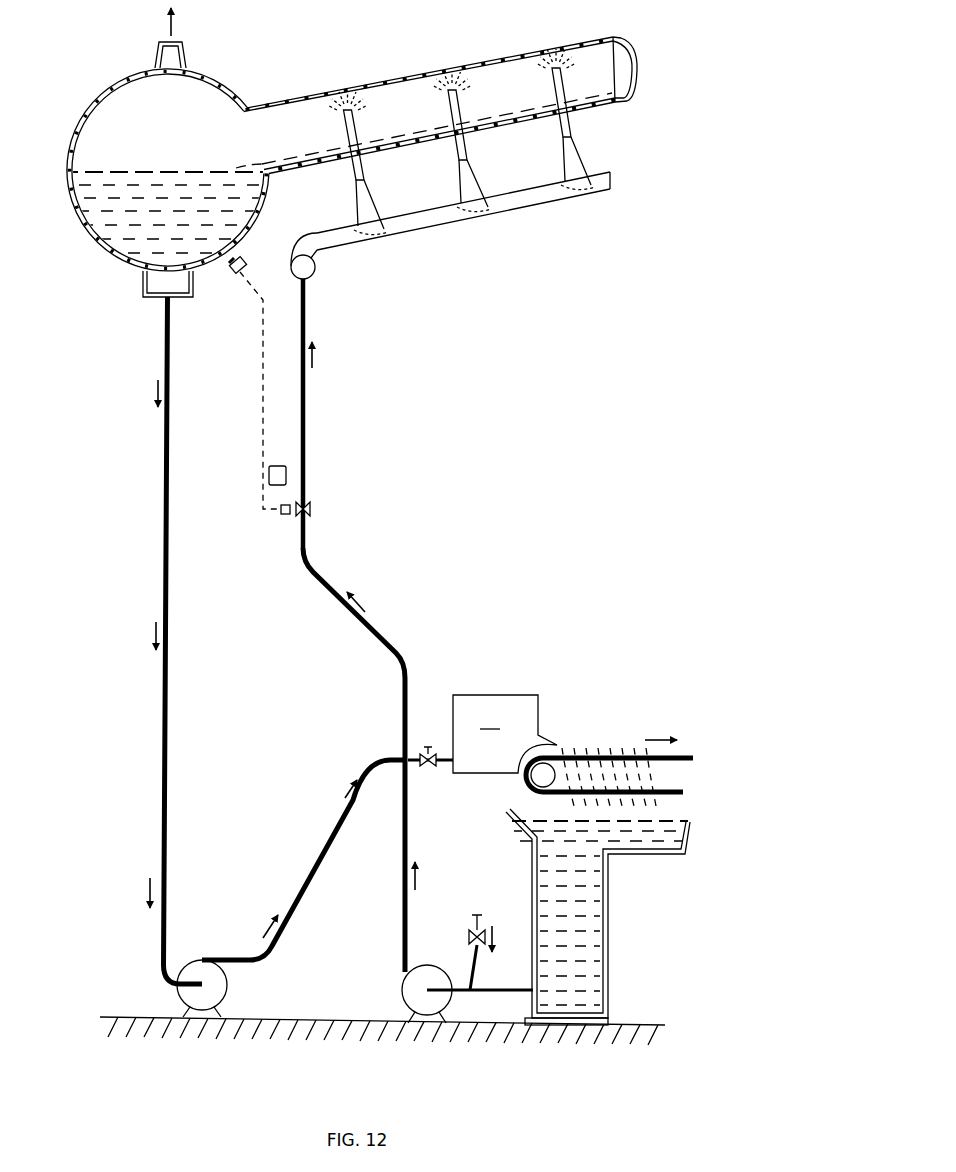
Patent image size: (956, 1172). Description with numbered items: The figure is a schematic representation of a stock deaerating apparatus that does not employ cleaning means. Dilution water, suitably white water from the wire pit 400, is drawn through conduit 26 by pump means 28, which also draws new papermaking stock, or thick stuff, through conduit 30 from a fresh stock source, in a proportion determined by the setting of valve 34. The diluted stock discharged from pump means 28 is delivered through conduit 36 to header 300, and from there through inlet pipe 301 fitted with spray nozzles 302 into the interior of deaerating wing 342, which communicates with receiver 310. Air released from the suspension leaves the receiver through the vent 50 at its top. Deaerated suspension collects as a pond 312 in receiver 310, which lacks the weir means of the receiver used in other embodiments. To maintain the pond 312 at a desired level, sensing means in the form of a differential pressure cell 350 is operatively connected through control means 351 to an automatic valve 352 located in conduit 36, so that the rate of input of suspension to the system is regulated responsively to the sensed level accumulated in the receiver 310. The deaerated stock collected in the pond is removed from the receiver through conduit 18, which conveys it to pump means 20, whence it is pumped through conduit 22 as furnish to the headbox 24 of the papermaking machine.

The vapor vent 50 is at (177, 25).
The receiver 310 is at (227, 80).
The pond 312 is at (152, 231).
The deaerating wing 342 is at (377, 83).
The inlet pipe 301 is at (363, 163).
The spray nozzles 302 is at (373, 237).
The header 300 is at (315, 270).
The differential pressure cell 350 is at (235, 273).
The control means 351 is at (268, 474).
The automatic valve 352 is at (310, 508).
The conduit 18 is at (162, 713).
The pump means 20 is at (228, 985).
The conduit 22 is at (322, 855).
The conduit 36 is at (407, 815).
The headbox 24 is at (550, 750).
The pump means 28 is at (400, 1001).
The conduit 30 is at (475, 965).
The valve 34 is at (470, 935).
The conduit 26 is at (482, 993).
The wire pit 400 is at (577, 937).